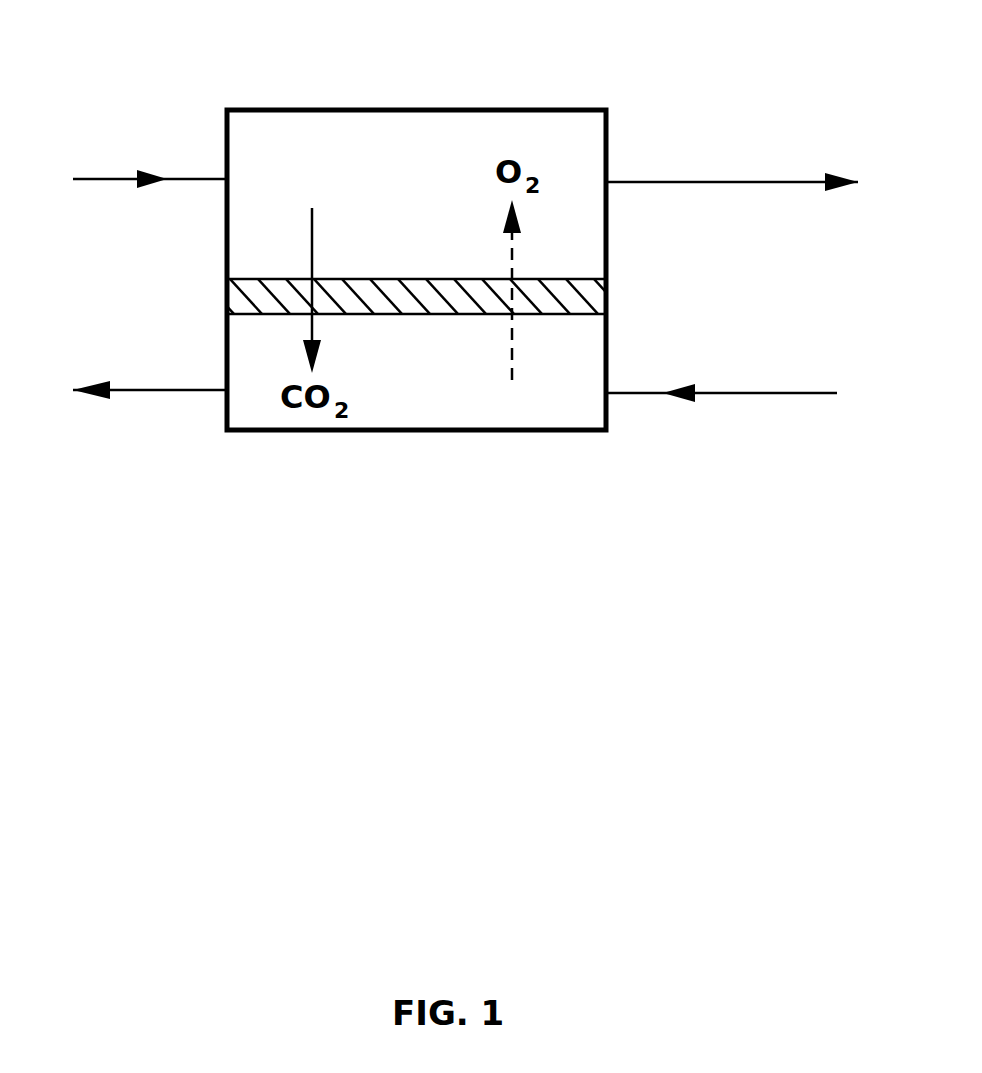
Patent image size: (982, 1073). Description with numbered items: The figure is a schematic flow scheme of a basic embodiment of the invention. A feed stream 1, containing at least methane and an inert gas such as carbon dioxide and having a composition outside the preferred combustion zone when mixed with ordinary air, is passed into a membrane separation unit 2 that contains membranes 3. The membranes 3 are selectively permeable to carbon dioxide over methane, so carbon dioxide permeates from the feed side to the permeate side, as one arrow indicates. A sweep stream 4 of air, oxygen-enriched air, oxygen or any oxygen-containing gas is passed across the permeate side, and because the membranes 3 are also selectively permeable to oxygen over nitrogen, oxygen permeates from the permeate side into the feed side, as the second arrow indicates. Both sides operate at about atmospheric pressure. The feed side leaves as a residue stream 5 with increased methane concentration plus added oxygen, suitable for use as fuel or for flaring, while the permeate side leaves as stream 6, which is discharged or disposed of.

The feed stream 1 is at (133, 179).
The membrane separation unit 2 is at (552, 107).
The membranes 3 is at (355, 279).
The sweep stream 4 is at (745, 393).
The residue stream 5 is at (749, 182).
The permeate stream 6 is at (134, 390).